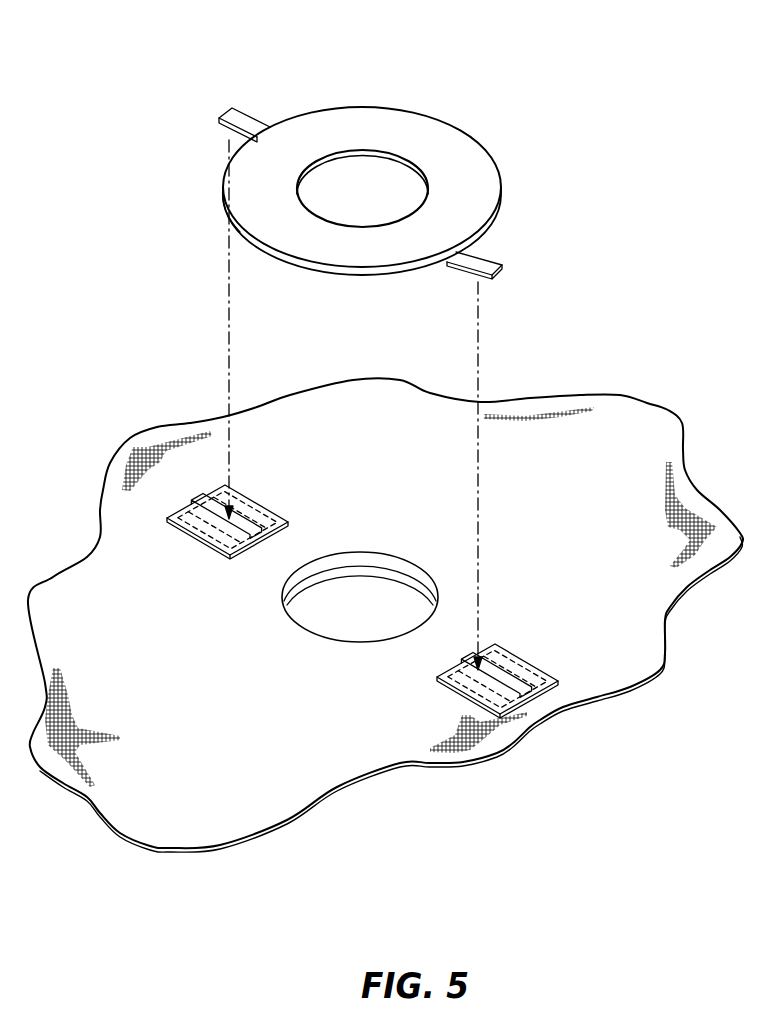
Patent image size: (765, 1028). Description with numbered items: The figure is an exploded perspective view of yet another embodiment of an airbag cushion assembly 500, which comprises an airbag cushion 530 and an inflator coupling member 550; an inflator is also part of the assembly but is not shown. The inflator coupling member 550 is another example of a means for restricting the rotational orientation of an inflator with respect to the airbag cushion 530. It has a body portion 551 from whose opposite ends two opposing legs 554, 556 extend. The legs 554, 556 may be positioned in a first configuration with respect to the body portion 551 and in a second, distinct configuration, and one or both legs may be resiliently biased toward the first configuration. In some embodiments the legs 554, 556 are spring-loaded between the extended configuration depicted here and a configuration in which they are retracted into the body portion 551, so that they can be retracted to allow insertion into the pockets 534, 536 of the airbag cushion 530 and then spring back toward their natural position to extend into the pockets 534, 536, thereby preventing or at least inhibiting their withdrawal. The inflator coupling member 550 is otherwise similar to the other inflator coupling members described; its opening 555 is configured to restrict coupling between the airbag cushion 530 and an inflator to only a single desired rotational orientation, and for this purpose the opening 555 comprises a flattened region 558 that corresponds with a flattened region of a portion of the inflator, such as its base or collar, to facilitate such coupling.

The airbag cushion assembly 500 is at (385, 438).
The airbag cushion 530 is at (385, 600).
The pocket 534 is at (508, 680).
The pocket 536 is at (208, 502).
The inflator coupling member 550 is at (353, 151).
The body portion 551 is at (260, 228).
The leg 554 is at (490, 258).
The opening 555 is at (354, 176).
The leg 556 is at (247, 123).
The flattened region 558 is at (411, 215).